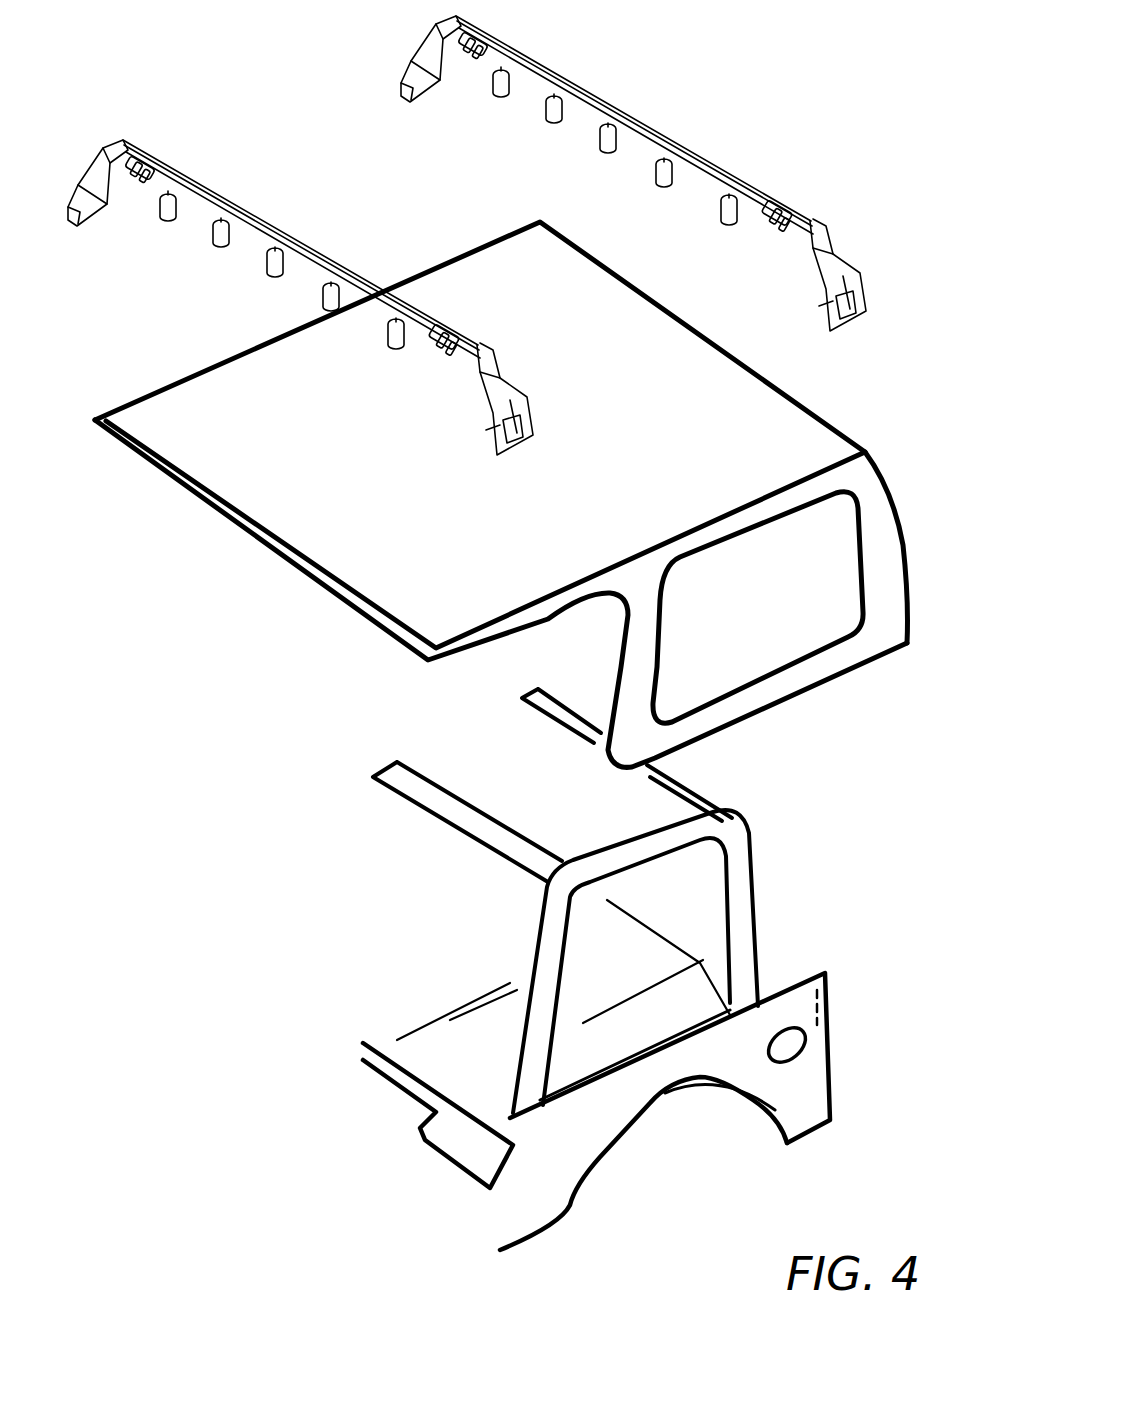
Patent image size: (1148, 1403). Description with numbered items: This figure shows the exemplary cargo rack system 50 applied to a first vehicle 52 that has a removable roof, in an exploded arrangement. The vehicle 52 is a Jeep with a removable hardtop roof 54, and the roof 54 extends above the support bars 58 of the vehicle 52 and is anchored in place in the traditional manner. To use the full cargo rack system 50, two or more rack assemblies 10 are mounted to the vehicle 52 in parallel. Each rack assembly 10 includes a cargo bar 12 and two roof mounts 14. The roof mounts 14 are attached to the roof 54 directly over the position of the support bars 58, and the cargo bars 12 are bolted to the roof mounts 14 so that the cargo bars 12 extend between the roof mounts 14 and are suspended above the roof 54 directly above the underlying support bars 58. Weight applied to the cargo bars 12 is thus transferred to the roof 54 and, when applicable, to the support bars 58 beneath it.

The rack assembly 10 is at (494, 231).
The cargo bar 12 is at (655, 131).
The roof mount 14 is at (420, 57).
The cargo rack system 50 is at (494, 231).
The vehicle 52 is at (833, 980).
The hardtop roof 54 is at (888, 482).
The support bar 58 is at (606, 735).